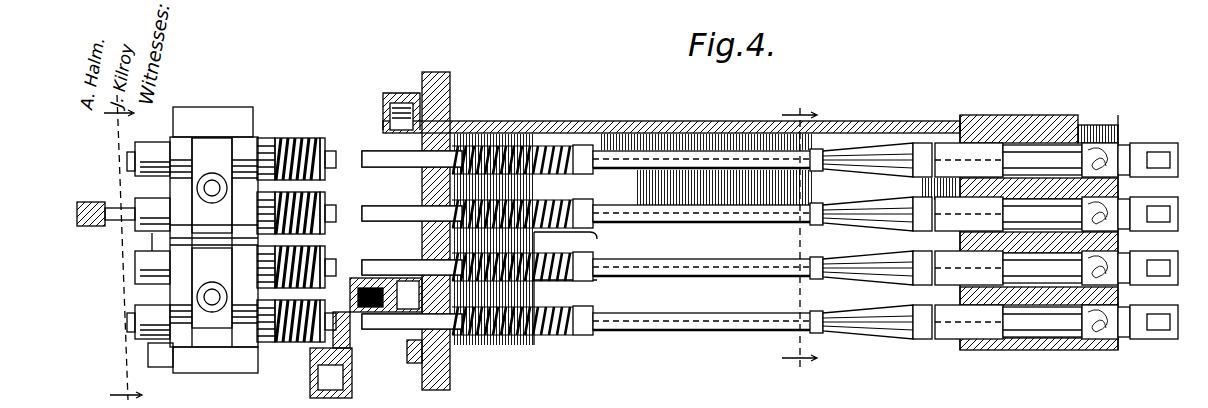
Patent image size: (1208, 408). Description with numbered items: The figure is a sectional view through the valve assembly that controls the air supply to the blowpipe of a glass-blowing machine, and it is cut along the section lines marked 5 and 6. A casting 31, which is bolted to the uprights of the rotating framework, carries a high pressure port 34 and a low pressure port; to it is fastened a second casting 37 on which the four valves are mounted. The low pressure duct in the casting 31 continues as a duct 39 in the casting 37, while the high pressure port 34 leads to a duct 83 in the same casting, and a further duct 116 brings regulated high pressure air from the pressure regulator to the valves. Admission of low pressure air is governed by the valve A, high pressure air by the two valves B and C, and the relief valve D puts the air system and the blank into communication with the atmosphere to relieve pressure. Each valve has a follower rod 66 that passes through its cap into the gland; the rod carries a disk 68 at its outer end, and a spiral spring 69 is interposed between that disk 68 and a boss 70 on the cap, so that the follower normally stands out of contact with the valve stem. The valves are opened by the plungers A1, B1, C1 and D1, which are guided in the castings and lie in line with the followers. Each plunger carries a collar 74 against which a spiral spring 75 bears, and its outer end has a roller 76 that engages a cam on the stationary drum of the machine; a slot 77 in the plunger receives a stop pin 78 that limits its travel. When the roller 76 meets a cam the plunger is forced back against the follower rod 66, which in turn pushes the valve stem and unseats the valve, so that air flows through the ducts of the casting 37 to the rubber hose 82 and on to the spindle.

The section line 6- 6 is at (123, 241).
The section line 5- 5 is at (799, 237).
The valve A is at (250, 148).
The valve B is at (182, 267).
The valve C is at (180, 205).
The relief valve D is at (190, 355).
The rubber hose 82 is at (95, 230).
The boss 70 is at (264, 342).
The spiral spring 69 is at (288, 342).
The disk 68 is at (336, 232).
The follower rod 66 is at (352, 262).
The casting 37 is at (372, 148).
The duct 83 is at (385, 280).
The duct 116 is at (352, 380).
The casting 31 is at (855, 405).
The duct 39 is at (405, 92).
The high pressure port 34 is at (1012, 130).
The spiral spring 75 is at (552, 318).
The collar 74 is at (595, 254).
The plunger A1 is at (690, 150).
The plunger B1 is at (718, 278).
The plunger C1 is at (686, 223).
The plunger D1 is at (740, 330).
The stop pin 78 is at (1115, 262).
The slot 77 is at (1122, 312).
The roller 76 is at (1178, 260).